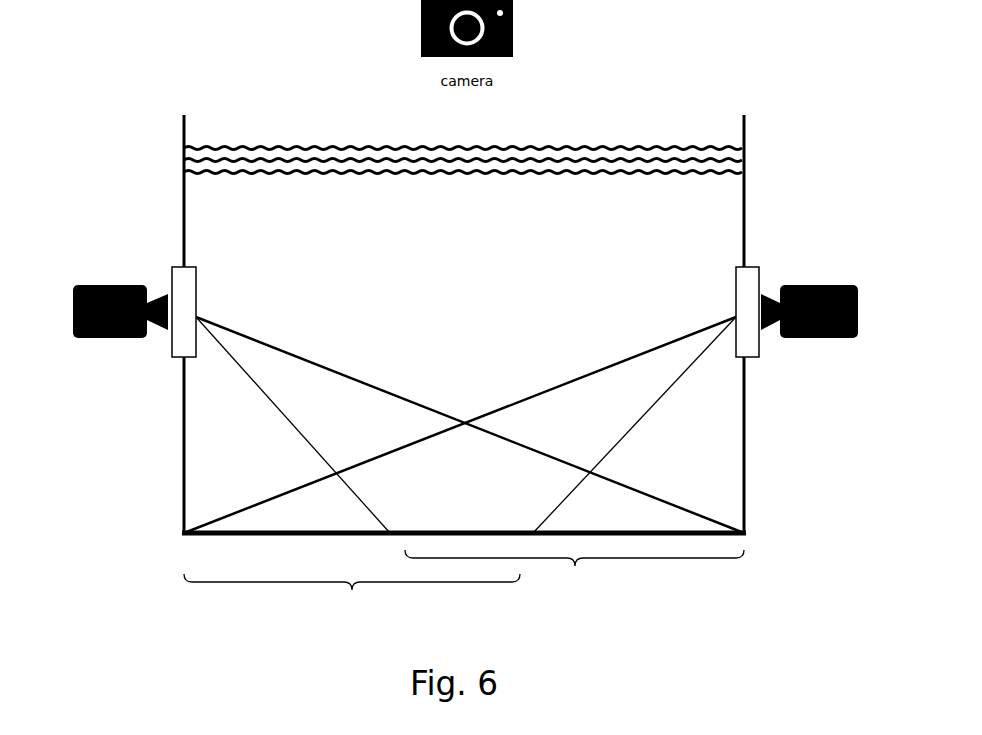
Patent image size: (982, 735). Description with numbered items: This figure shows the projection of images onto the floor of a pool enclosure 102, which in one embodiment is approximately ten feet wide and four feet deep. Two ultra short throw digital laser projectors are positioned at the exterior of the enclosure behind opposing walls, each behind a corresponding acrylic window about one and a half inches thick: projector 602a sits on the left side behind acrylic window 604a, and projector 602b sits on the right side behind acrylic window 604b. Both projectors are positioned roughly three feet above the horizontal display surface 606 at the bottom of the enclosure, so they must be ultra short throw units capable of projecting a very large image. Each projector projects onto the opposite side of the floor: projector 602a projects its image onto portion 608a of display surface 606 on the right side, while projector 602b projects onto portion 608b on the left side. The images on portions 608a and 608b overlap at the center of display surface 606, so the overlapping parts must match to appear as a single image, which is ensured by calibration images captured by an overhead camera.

The pool enclosure 102 is at (182, 142).
The projector 602a is at (118, 285).
The projector 602b is at (815, 282).
The acrylic window 604a is at (170, 268).
The acrylic window 604b is at (760, 267).
The display surface 606 is at (280, 538).
The portion of display surface 608a is at (574, 575).
The portion of display surface 608b is at (352, 602).